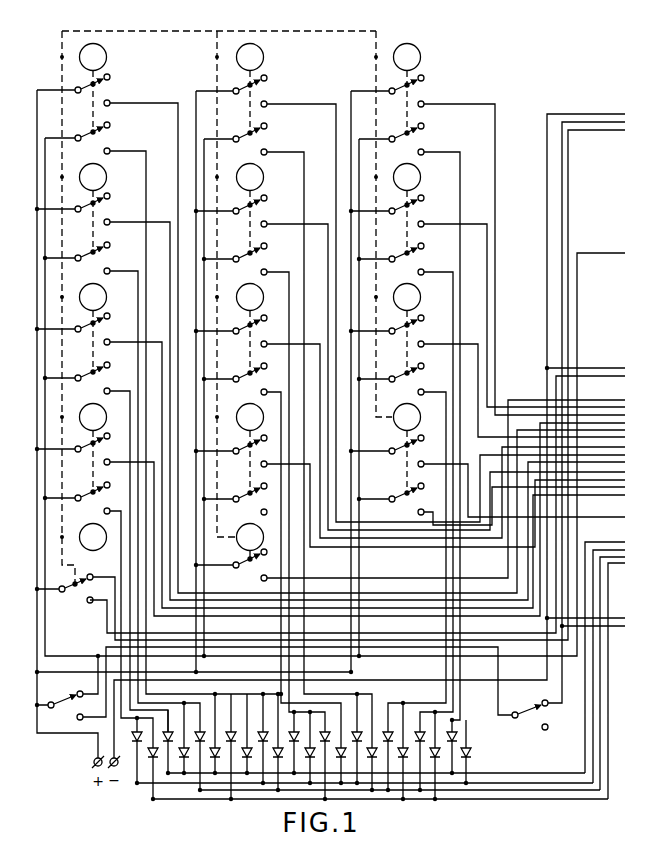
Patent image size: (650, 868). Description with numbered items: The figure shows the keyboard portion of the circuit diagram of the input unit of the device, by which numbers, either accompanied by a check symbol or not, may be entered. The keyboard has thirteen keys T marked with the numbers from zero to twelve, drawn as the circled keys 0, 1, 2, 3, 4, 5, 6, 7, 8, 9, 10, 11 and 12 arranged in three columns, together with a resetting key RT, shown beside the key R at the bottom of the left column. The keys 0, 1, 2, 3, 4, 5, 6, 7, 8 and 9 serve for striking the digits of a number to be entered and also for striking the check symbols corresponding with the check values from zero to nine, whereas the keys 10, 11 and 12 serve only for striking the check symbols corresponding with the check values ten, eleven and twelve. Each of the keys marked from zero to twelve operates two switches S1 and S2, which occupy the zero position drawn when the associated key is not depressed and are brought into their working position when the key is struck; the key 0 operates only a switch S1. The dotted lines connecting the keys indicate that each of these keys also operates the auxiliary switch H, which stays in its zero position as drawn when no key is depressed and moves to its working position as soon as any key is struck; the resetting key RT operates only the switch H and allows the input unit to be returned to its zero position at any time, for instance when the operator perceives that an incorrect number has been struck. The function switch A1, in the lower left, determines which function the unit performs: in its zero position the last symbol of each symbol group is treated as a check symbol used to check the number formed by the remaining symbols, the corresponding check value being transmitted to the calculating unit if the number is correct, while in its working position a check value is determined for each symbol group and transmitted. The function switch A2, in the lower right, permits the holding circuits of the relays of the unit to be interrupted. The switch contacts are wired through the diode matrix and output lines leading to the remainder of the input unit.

The key marked with the number 0 is at (250, 553).
The key marked with the number 1 is at (92, 459).
The key marked with the number 2 is at (250, 460).
The key marked with the number 3 is at (406, 460).
The key marked with the number 4 is at (92, 339).
The key marked with the number 5 is at (250, 340).
The key marked with the number 6 is at (406, 340).
The key marked with the number 7 is at (92, 219).
The key marked with the number 8 is at (250, 220).
The key marked with the number 9 is at (406, 220).
The key marked with the number 10 is at (92, 99).
The key marked with the number 11 is at (250, 100).
The key marked with the number 12 is at (406, 100).
The reset key R is at (93, 537).
The resetting key RT is at (104, 546).
The keys T is at (107, 54).
The switch S1 is at (97, 93).
The switch S2 is at (97, 141).
The auxiliary switch H is at (68, 592).
The function switch A1 is at (64, 703).
The function switch A2 is at (528, 712).